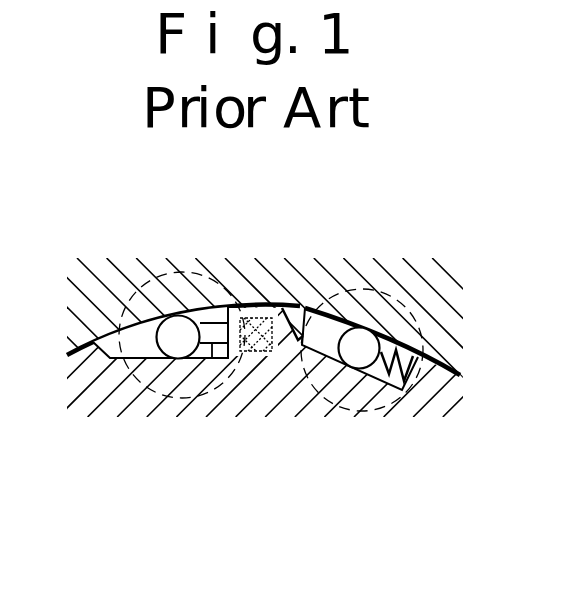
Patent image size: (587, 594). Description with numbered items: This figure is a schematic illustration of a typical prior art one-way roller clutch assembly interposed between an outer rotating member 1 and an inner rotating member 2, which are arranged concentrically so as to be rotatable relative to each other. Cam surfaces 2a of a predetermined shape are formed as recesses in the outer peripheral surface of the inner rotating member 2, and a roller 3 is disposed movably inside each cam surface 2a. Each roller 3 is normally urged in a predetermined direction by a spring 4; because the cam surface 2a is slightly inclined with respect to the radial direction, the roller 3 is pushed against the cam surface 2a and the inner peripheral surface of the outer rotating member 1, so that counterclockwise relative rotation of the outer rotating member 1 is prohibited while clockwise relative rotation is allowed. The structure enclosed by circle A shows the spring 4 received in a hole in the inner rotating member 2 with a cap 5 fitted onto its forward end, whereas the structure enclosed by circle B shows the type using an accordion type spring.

The outer rotating member 1 is at (92, 278).
The inner rotating member 2 is at (87, 372).
The cam surface 2a is at (141, 378).
The roller 3 is at (175, 318).
The spring 4 is at (405, 338).
The cap 5 is at (212, 360).
The circle A is at (178, 392).
The circle B is at (392, 400).